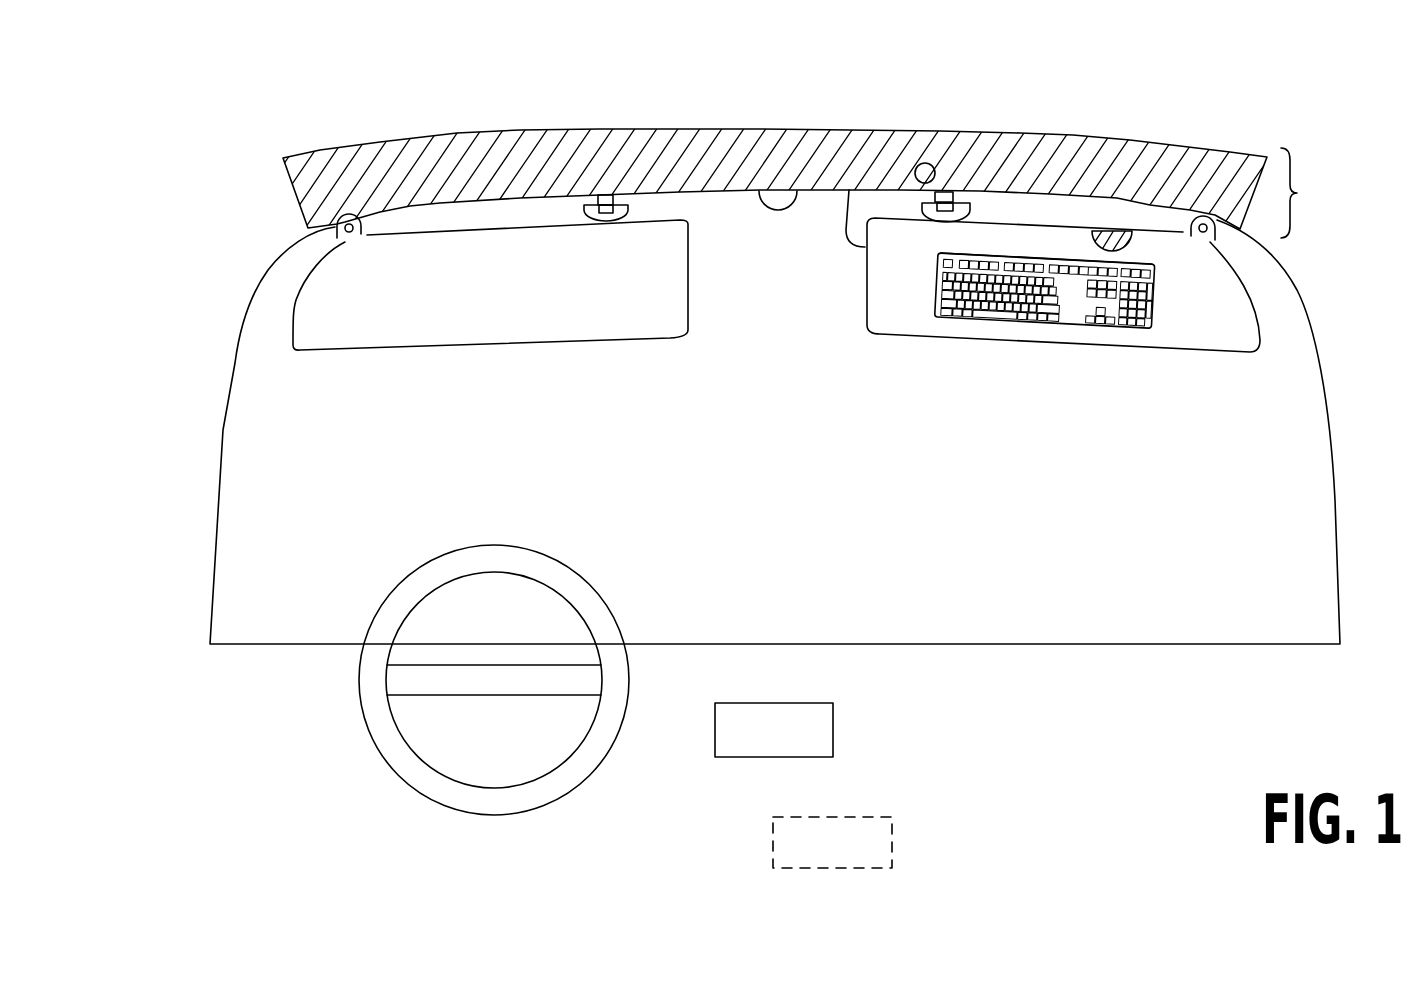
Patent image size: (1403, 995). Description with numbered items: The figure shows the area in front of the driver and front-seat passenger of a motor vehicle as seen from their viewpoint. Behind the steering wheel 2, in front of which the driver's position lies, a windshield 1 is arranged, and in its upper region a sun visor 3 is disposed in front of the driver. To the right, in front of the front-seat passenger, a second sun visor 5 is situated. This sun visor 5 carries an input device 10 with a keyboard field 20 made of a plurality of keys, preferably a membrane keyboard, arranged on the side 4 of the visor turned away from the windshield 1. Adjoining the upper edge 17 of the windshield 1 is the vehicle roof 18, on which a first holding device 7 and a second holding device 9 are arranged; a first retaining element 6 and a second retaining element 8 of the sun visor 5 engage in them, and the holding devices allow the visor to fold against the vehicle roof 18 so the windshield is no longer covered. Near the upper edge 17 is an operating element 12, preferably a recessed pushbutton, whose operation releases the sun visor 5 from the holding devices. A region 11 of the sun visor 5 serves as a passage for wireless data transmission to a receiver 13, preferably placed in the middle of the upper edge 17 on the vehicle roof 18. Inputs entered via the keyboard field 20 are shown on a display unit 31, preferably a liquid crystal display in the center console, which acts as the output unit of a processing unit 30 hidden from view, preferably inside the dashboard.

The windshield 1 is at (262, 432).
The steering wheel 2 is at (397, 743).
The sun visor 3 is at (507, 247).
The side 4 is at (1228, 297).
The sun visor 5 is at (849, 190).
The first retaining element 6 is at (970, 216).
The first holding device 7 is at (942, 197).
The second retaining element 8 is at (1217, 224).
The second holding device 9 is at (1203, 217).
The input device 10 is at (1052, 256).
The region 11 is at (1113, 230).
The operating element 12 is at (922, 163).
The receiver 13 is at (776, 187).
The upper edge 17 is at (410, 205).
The vehicle roof 18 is at (1312, 193).
The keyboard field 20 is at (1023, 297).
The processing unit 30 is at (878, 845).
The display unit 31 is at (835, 731).